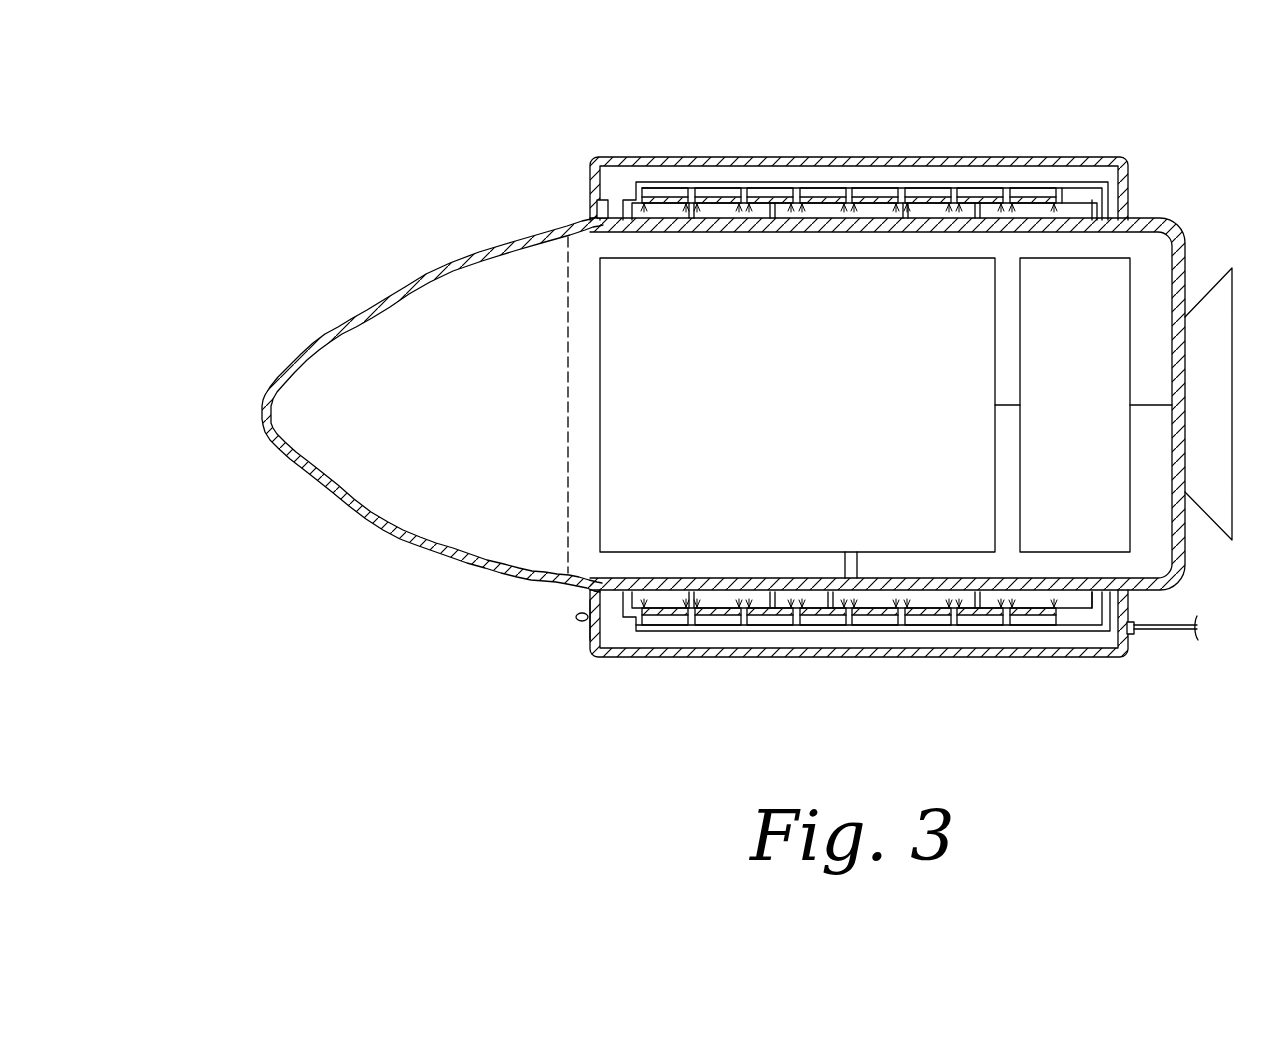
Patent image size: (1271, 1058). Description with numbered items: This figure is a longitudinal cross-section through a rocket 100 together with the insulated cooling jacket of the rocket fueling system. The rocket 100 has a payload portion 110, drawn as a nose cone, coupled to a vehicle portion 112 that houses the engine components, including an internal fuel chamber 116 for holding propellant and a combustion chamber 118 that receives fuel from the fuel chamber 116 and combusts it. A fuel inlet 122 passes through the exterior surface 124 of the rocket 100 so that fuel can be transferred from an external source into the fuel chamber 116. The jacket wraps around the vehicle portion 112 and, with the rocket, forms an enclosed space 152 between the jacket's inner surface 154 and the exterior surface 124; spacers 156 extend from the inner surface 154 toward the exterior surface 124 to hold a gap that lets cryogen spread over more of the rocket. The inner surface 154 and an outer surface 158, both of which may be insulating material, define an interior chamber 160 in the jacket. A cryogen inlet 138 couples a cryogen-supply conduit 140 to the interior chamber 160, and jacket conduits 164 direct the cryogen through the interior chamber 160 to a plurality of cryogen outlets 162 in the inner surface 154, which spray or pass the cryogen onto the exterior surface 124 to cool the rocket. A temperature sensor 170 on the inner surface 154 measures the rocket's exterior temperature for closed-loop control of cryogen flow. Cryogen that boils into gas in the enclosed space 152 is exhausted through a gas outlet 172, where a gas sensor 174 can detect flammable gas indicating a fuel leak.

The rocket 100 is at (287, 289).
The payload portion 110 is at (392, 538).
The vehicle portion 112 is at (1158, 213).
The internal fuel chamber 116 is at (781, 416).
The combustion chamber 118 is at (1057, 416).
The fuel inlet 122 is at (862, 561).
The exterior surface 124 is at (582, 243).
The cryogen inlet 138 is at (1133, 633).
The cryogen-supply conduit 140 is at (1197, 640).
The enclosed space 152 is at (708, 207).
The inner surface 154 is at (910, 205).
The spacer 156 is at (771, 207).
The outer surface 158 is at (938, 155).
The interior chamber 160 is at (1014, 170).
The cryogen outlet 162 is at (1060, 207).
The jacket conduit 164 is at (665, 182).
The temperature sensor 170 is at (603, 157).
The gas outlet 172 is at (588, 608).
The gas sensor 174 is at (577, 620).